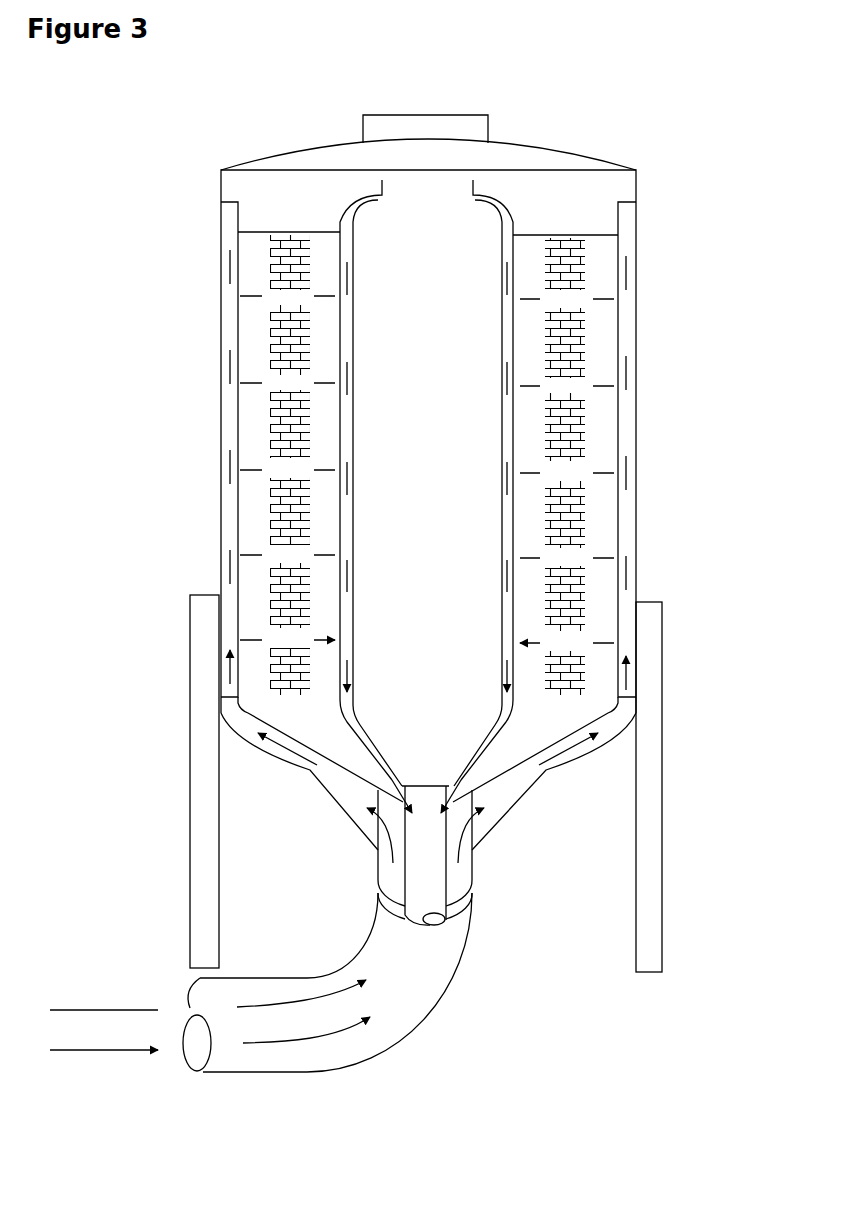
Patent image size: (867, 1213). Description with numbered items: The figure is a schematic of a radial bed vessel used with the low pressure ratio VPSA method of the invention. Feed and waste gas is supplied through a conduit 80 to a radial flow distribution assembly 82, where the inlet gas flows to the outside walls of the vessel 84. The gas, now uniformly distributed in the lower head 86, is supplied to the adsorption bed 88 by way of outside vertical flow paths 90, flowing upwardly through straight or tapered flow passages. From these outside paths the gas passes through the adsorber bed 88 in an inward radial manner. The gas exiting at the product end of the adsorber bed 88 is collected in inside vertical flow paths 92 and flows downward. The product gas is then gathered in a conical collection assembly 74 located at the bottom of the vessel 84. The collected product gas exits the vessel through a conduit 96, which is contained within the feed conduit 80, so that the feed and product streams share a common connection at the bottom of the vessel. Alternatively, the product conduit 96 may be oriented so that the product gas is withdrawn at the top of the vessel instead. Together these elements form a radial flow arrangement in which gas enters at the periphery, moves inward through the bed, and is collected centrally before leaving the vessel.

The conical collection assembly 74 is at (424, 782).
The conduit 80 is at (448, 982).
The radial flow distribution assembly 82 is at (345, 797).
The vessel 84 is at (645, 382).
The lower head 86 is at (288, 758).
The adsorption bed 88 is at (250, 422).
The outside vertical flow paths 90 is at (226, 513).
The inside vertical flow paths 92 is at (505, 428).
The conduit 96 is at (430, 883).